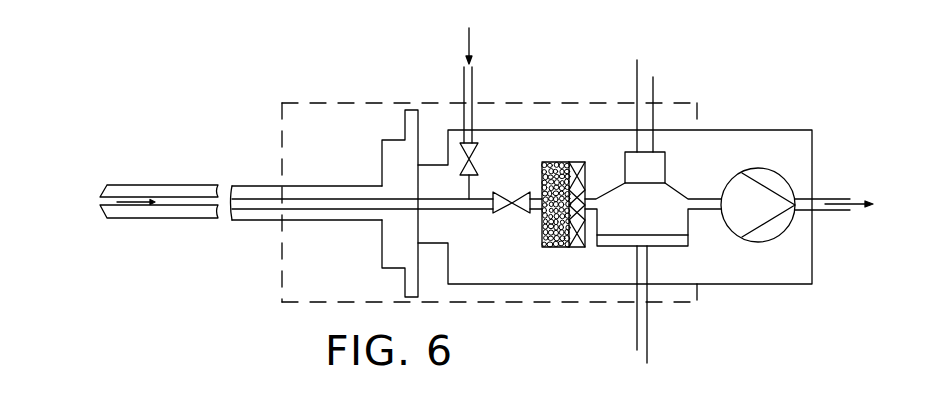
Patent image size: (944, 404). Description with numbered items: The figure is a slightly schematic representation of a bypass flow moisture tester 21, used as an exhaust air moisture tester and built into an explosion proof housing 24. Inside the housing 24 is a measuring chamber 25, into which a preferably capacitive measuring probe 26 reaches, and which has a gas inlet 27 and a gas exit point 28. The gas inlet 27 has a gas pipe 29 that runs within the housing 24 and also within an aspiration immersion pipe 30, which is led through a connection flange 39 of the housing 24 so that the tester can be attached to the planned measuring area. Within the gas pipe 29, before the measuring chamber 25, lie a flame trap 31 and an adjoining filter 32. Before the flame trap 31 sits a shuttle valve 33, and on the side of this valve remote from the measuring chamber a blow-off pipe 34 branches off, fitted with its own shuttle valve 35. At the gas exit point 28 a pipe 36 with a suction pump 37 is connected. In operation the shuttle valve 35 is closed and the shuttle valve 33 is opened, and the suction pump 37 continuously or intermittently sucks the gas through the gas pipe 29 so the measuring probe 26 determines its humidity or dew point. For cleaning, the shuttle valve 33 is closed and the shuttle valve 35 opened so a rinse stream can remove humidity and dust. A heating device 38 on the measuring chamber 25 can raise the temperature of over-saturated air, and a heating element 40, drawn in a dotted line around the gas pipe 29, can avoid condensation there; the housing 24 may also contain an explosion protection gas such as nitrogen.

The exhaust air moisture tester 21 is at (727, 63).
The explosion proof housing 24 is at (753, 130).
The measuring chamber 25 is at (663, 222).
The measuring probe 26 is at (654, 164).
The gas inlet 27 is at (593, 196).
The gas exit point 28 is at (697, 186).
The gas pipe 29 is at (350, 206).
The aspiration immersion pipe 30 is at (252, 186).
The flame trap 31 is at (558, 152).
The filter 32 is at (578, 256).
The shuttle valve 33 is at (505, 213).
The blow-off pipe 34 is at (472, 188).
The shuttle valve 35 is at (477, 149).
The pipe 36 is at (705, 202).
The suction pump 37 is at (765, 233).
The heating device 38 is at (660, 245).
The connection flange 39 is at (398, 250).
The heating element 40 is at (362, 100).